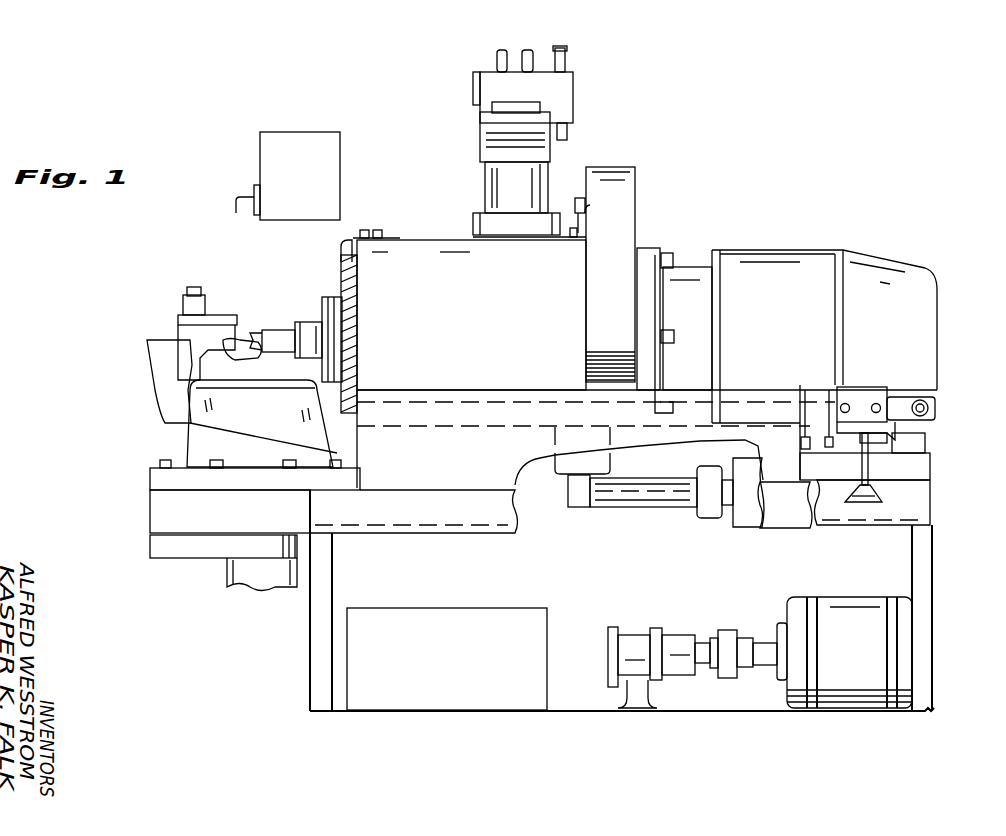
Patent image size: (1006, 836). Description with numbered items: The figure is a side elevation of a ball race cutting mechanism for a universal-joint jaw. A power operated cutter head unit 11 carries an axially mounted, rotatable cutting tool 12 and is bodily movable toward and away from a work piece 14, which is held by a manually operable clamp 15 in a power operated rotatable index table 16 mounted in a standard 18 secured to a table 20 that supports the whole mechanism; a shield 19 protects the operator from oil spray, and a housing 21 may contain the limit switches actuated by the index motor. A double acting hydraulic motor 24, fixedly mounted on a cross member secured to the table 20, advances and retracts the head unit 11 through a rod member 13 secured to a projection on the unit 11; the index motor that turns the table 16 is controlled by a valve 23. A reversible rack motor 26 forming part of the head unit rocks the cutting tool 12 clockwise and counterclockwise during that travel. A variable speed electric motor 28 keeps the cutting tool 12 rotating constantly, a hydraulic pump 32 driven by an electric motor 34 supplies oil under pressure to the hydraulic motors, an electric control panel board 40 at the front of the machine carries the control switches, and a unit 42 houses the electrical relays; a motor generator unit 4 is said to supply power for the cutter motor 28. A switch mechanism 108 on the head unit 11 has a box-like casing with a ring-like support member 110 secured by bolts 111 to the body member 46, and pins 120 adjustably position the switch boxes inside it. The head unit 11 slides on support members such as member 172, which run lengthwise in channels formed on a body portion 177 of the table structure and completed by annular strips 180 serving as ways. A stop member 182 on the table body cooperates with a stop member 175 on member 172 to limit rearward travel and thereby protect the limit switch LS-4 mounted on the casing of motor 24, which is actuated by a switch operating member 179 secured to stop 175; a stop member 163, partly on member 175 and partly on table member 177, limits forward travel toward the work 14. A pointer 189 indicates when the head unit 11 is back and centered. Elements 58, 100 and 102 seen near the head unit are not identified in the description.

The power operated cutter head unit 11 is at (657, 217).
The rotatable cutting tool 12 is at (278, 338).
The rod member 13 is at (612, 494).
The work piece 14 is at (212, 350).
The manually operable clamp 15 is at (193, 325).
The index table 16 is at (200, 398).
The standard 18 is at (242, 413).
The shield 19 is at (158, 352).
The table 20 is at (235, 520).
The housing 21 is at (840, 515).
The valve 23 is at (567, 473).
The double acting pressure differential operated motor 24 is at (748, 506).
The rack motor 26 is at (497, 176).
The variable speed electric motor 28 is at (866, 270).
The hydraulic pump 32 is at (677, 660).
The electric motor 34 is at (850, 686).
The electric control panel board 40 is at (282, 141).
The relay housing unit 42 is at (455, 702).
The body member 46 is at (392, 240).
The spindle 58 is at (328, 302).
The support block 100 is at (660, 247).
The bracket 102 is at (668, 270).
The switch mechanism 108 is at (622, 190).
The ring like support member 110 is at (558, 236).
The bolts 111 is at (574, 238).
The pins 120 is at (578, 205).
The stop member 163 is at (830, 436).
The support member 172 is at (445, 407).
The stop member 175 is at (852, 428).
The body portion 177 is at (735, 392).
The switch operating member 179 is at (934, 410).
The annular strips 180 is at (378, 396).
The stop member 182 is at (870, 465).
The pointer 189 is at (338, 243).
The limit switch LS-4 is at (918, 443).
The motor generator unit 4 is at (626, 113).